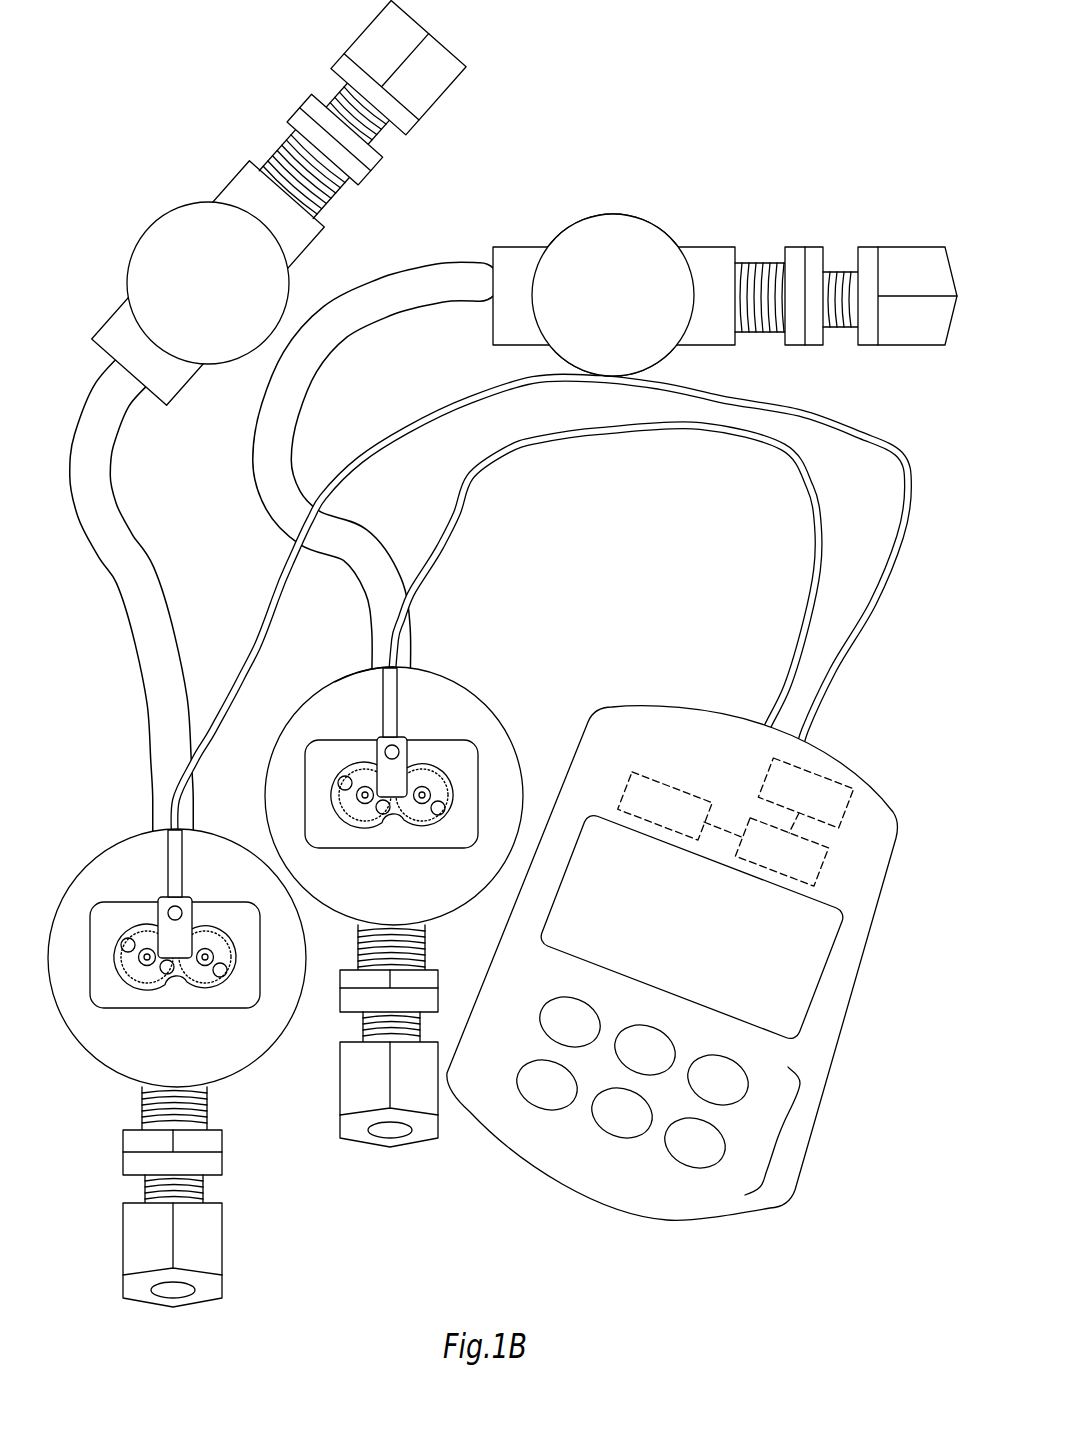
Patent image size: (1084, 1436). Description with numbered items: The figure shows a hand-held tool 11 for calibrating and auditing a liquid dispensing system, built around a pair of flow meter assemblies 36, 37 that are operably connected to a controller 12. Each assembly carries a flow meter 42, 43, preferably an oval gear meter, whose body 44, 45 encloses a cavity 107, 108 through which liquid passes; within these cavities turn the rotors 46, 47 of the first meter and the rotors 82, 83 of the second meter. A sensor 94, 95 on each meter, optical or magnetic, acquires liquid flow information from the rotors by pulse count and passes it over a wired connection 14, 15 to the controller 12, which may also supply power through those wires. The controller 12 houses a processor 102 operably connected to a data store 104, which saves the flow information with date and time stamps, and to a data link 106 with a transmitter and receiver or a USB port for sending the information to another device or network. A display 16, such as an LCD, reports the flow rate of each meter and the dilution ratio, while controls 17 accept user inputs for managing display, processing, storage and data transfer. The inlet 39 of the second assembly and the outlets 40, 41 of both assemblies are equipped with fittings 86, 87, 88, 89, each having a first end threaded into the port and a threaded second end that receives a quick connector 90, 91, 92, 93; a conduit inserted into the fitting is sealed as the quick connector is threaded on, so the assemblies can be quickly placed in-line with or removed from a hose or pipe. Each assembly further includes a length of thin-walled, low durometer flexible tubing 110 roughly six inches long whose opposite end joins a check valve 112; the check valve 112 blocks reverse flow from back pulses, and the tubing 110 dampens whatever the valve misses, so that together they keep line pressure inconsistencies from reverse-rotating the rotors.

The hand-held tool 11 is at (502, 653).
The controller 12 is at (690, 944).
The connection 14 is at (815, 555).
The connection 15 is at (908, 487).
The display 16 is at (813, 1005).
The controls 17 is at (780, 1137).
The flow meter assembly 36 is at (178, 1068).
The flow meter assembly 37 is at (409, 899).
The inlet 39 is at (370, 668).
The outlet 40 is at (140, 1085).
The outlet 41 is at (420, 927).
The flow meter 42 is at (133, 865).
The flow meter 43 is at (493, 748).
The body 44 is at (235, 1045).
The body 45 is at (352, 702).
The rotor 46 is at (132, 955).
The rotor 47 is at (218, 955).
The rotor 82 is at (350, 800).
The rotor 83 is at (432, 795).
The fitting 86 is at (355, 1003).
The fitting 87 is at (808, 247).
The fitting 88 is at (298, 102).
The fitting 89 is at (133, 1142).
The quick connector 90 is at (425, 1132).
The quick connector 91 is at (905, 345).
The quick connector 92 is at (131, 1240).
The quick connector 93 is at (353, 44).
The sensor 94 is at (177, 930).
The sensor 95 is at (395, 770).
The processor 102 is at (812, 865).
The data store 104 is at (658, 798).
The data link 106 is at (780, 782).
The cavity 107 is at (393, 828).
The cavity 108 is at (172, 990).
The flexible tubing 110 is at (258, 457).
The check valve 112 is at (150, 255).